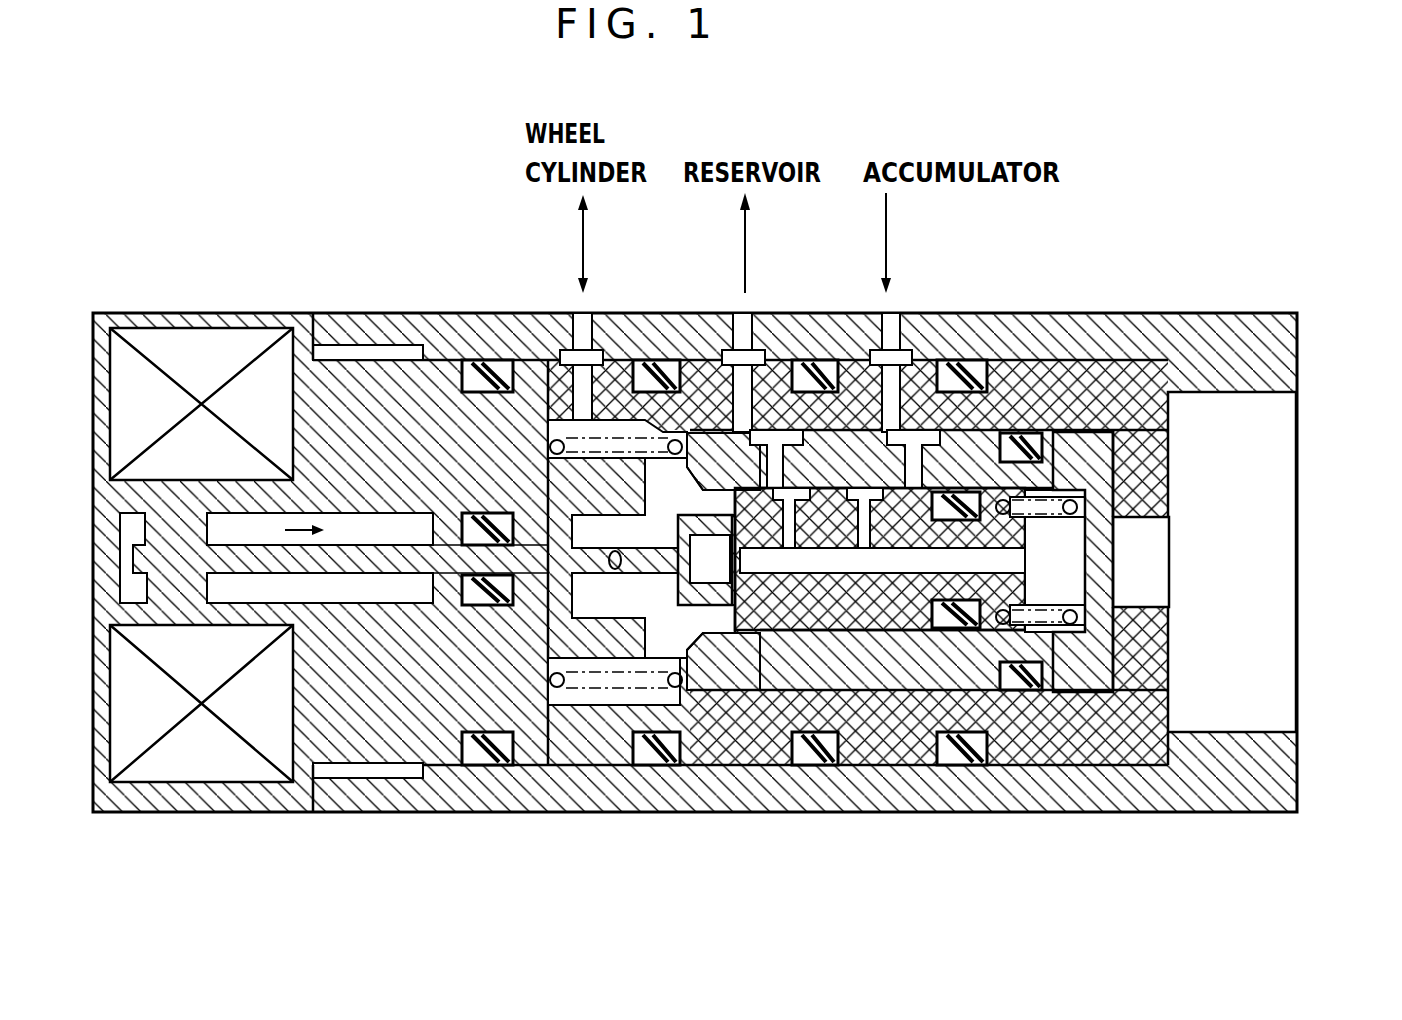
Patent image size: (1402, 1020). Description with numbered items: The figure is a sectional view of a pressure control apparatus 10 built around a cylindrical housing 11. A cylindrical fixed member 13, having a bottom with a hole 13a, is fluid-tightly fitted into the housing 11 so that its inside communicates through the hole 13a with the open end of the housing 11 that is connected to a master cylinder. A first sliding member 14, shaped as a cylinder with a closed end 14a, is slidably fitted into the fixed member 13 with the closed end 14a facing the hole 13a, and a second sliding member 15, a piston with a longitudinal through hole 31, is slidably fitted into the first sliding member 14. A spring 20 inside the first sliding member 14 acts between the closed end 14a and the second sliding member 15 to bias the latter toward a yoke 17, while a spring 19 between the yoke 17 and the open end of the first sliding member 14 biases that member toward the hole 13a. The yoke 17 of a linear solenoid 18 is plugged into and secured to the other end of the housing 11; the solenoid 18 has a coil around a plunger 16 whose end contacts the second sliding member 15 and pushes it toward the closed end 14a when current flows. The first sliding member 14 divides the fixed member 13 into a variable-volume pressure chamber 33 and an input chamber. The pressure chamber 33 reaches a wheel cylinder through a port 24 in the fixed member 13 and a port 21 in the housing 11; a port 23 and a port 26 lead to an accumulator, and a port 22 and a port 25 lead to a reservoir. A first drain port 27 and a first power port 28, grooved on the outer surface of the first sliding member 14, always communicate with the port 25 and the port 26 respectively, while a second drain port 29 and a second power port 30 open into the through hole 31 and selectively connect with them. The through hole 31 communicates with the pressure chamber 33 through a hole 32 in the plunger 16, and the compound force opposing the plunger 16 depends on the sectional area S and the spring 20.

The pressure control apparatus 10 is at (1158, 246).
The cylindrical housing 11 is at (1157, 325).
The cylindrical fixed member 13 is at (1085, 375).
The hole 13a is at (1150, 552).
The first sliding member 14 is at (1055, 427).
The closed end 14a is at (1103, 560).
The second sliding member 15 is at (887, 607).
The plunger 16 is at (387, 565).
The yoke 17 is at (362, 385).
The linear solenoid 18 is at (185, 352).
The spring 19 is at (583, 692).
The spring 20 is at (1063, 627).
The port 21 is at (583, 325).
The port 22 is at (740, 330).
The port 23 is at (887, 330).
The port 24 is at (512, 372).
The port 25 is at (668, 340).
The port 26 is at (887, 395).
The first drain port 27 is at (775, 445).
The first power port 28 is at (913, 447).
The second drain port 29 is at (789, 540).
The second power port 30 is at (863, 540).
The through hole 31 is at (970, 563).
The hole 32 is at (713, 603).
The pressure chamber 33 is at (672, 628).
The sectional area S is at (613, 550).